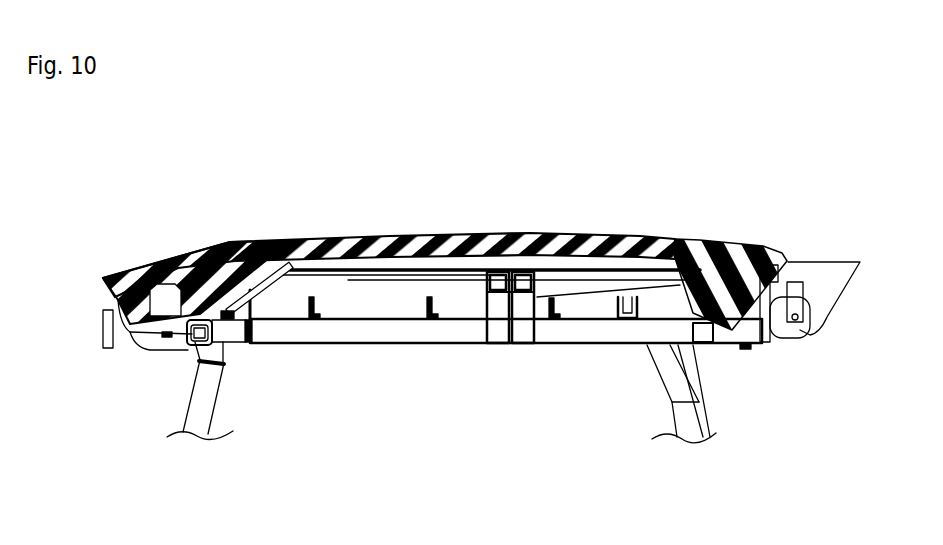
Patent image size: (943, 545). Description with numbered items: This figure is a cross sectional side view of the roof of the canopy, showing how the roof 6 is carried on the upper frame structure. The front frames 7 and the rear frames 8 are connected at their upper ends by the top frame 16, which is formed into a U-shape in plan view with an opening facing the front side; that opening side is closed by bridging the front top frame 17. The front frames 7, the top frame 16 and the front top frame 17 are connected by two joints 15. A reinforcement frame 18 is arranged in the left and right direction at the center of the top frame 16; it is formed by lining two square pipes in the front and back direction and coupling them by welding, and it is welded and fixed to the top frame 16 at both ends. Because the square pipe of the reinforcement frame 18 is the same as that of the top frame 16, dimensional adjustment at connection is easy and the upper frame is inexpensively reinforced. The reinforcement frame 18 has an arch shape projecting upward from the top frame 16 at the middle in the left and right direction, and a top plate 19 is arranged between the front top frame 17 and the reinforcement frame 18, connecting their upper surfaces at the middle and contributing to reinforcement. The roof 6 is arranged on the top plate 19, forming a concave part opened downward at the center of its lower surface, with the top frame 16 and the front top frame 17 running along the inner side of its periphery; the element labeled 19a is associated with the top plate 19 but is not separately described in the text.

The roof 6 is at (247, 246).
The front frame 7 is at (209, 395).
The rear frame 8 is at (673, 412).
The joint 15 is at (228, 334).
The top frame 16 is at (403, 333).
The front top frame 17 is at (190, 350).
The reinforcement frame 18 is at (500, 333).
The top plate 19 is at (368, 268).
The support arm 19a is at (272, 285).